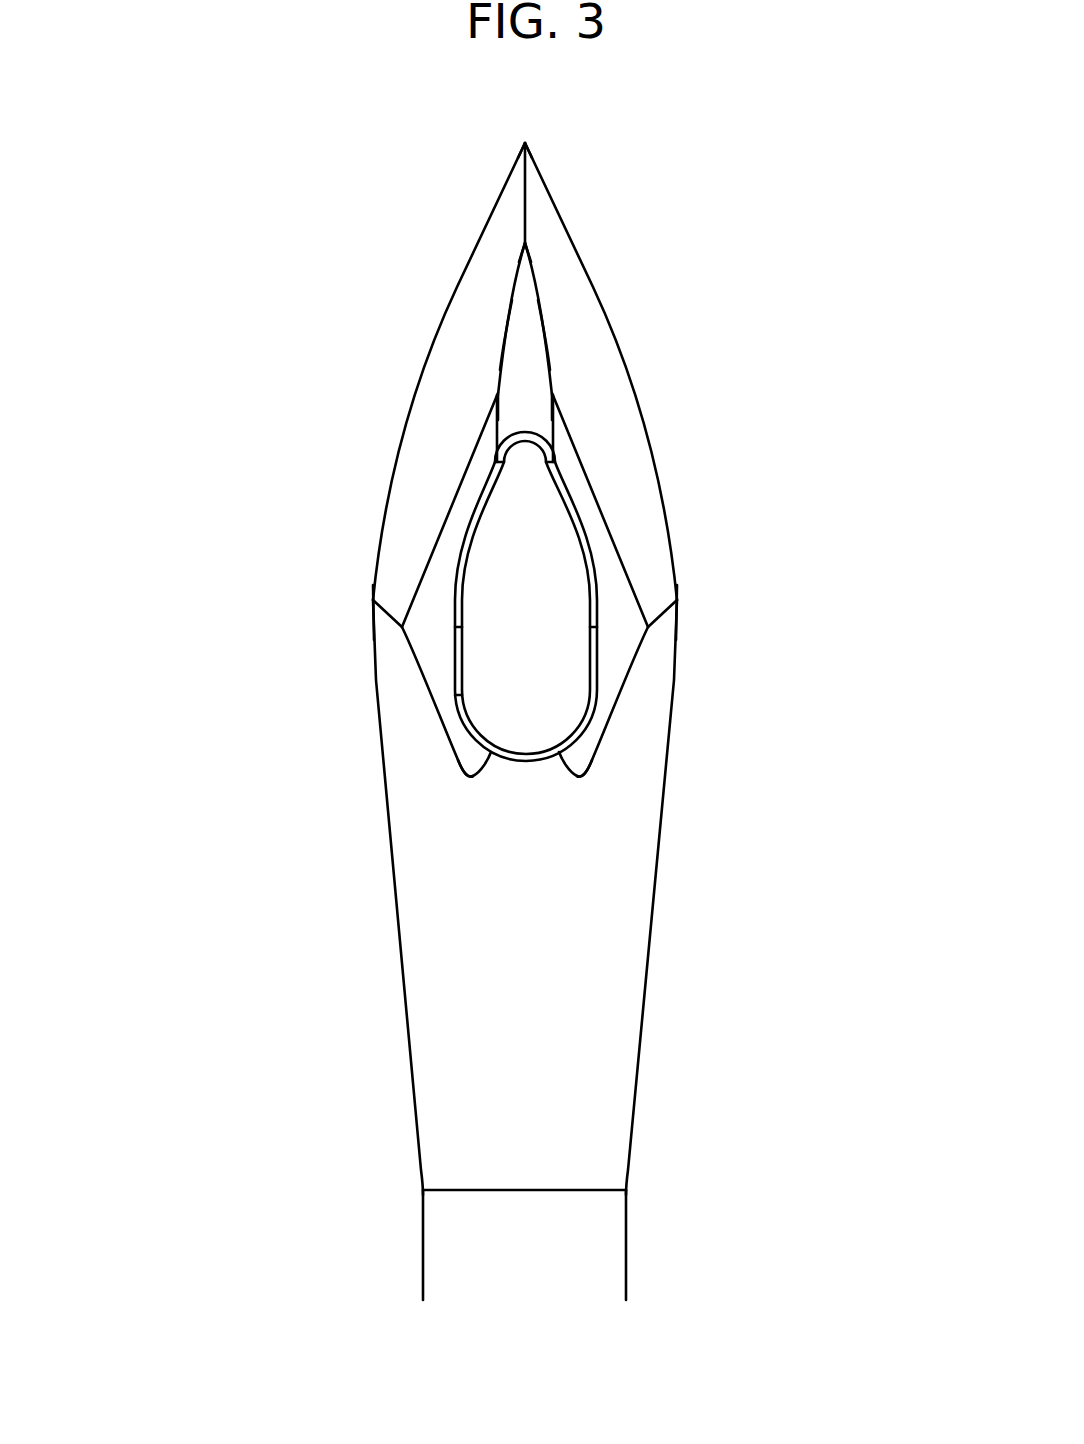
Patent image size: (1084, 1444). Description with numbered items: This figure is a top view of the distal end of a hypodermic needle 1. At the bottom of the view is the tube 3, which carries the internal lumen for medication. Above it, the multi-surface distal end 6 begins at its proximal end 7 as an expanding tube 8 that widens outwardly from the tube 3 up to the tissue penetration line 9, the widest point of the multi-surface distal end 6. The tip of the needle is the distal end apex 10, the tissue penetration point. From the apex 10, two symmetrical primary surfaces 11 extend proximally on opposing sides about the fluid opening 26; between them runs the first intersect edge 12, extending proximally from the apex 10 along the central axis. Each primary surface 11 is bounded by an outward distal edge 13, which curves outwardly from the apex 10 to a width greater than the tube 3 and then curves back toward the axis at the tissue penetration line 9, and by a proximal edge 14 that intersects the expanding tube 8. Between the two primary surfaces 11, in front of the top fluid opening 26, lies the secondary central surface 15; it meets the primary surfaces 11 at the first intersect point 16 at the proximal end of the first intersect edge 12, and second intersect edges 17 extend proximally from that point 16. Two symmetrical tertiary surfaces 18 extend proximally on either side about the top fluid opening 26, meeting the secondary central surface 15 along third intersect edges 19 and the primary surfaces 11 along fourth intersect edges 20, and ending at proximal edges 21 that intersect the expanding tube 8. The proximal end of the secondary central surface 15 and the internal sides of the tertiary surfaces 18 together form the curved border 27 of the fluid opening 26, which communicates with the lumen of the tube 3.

The hypodermic needle 1 is at (230, 1175).
The tube 3 is at (522, 1270).
The multi-surface distal end 6 is at (473, 1065).
The proximal end 7 is at (447, 1192).
The expanding tube 8 is at (588, 1003).
The tissue penetration line 9 is at (372, 620).
The distal end apex 10 is at (525, 142).
The primary surfaces 11 is at (500, 303).
The first intersect edge 12 is at (527, 205).
The outward distal edges 13 is at (405, 400).
The proximal edges 14 is at (373, 600).
The secondary central surface 15 is at (518, 413).
The first intersect point 16 is at (525, 242).
The second intersect edge 17 is at (505, 345).
The tertiary surfaces 18 is at (453, 750).
The third intersect edge 19 is at (495, 432).
The fourth intersect edge 20 is at (433, 535).
The proximal edges 21 is at (462, 772).
The fluid opening 26 is at (555, 682).
The curved border 27 is at (458, 695).